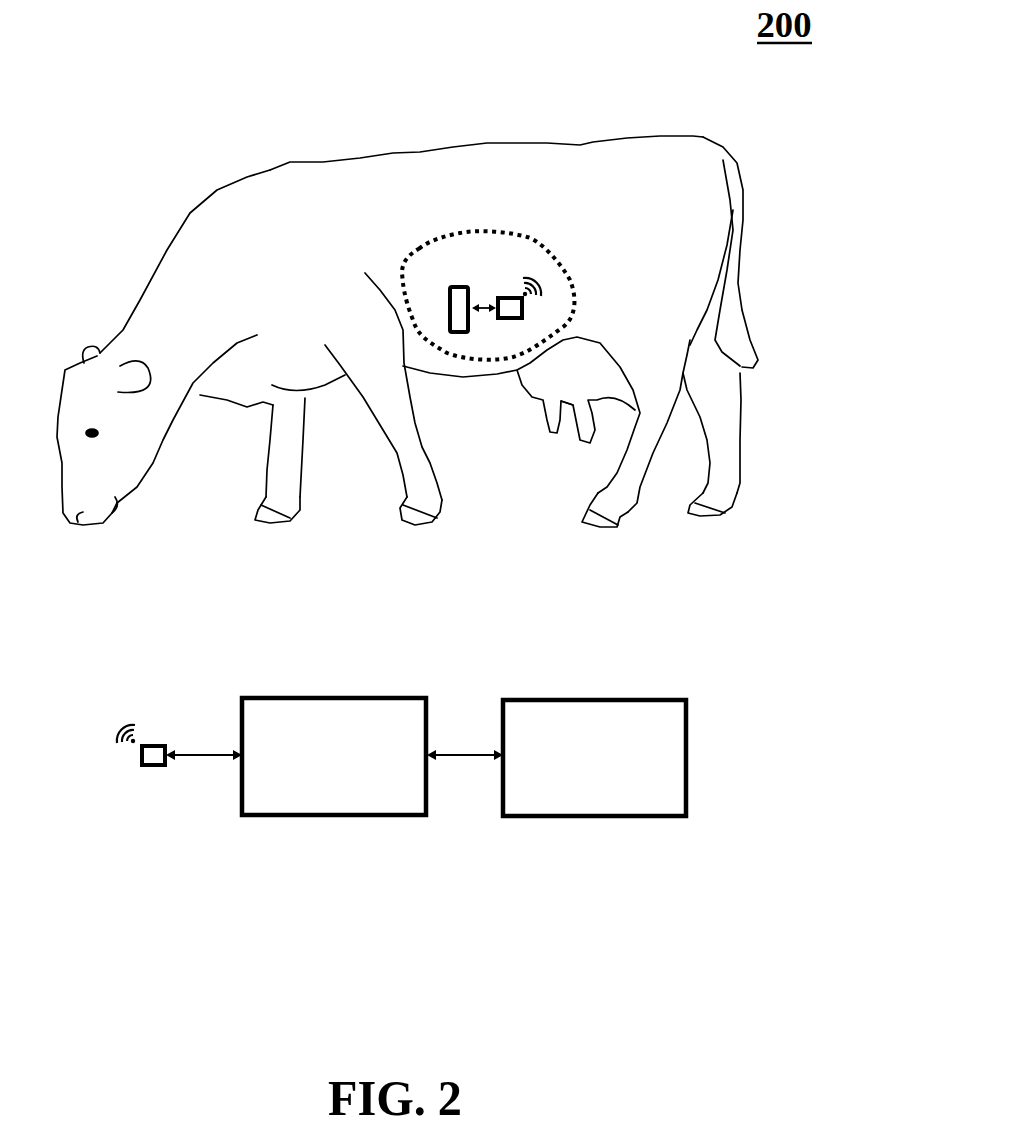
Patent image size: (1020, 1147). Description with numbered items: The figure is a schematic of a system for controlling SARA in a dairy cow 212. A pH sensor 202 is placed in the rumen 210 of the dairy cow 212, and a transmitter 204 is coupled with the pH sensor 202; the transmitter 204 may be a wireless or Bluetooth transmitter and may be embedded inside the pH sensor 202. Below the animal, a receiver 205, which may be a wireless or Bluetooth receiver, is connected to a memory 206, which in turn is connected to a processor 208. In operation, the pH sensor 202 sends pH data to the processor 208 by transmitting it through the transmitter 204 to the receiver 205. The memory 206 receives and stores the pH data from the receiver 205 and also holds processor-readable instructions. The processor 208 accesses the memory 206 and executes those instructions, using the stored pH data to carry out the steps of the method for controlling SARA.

The pH sensor 202 is at (467, 288).
The transmitter 204 is at (523, 308).
The receiver 205 is at (155, 747).
The memory 206 is at (305, 791).
The processor 208 is at (566, 792).
The rumen 210 is at (420, 248).
The dairy cow 212 is at (270, 170).